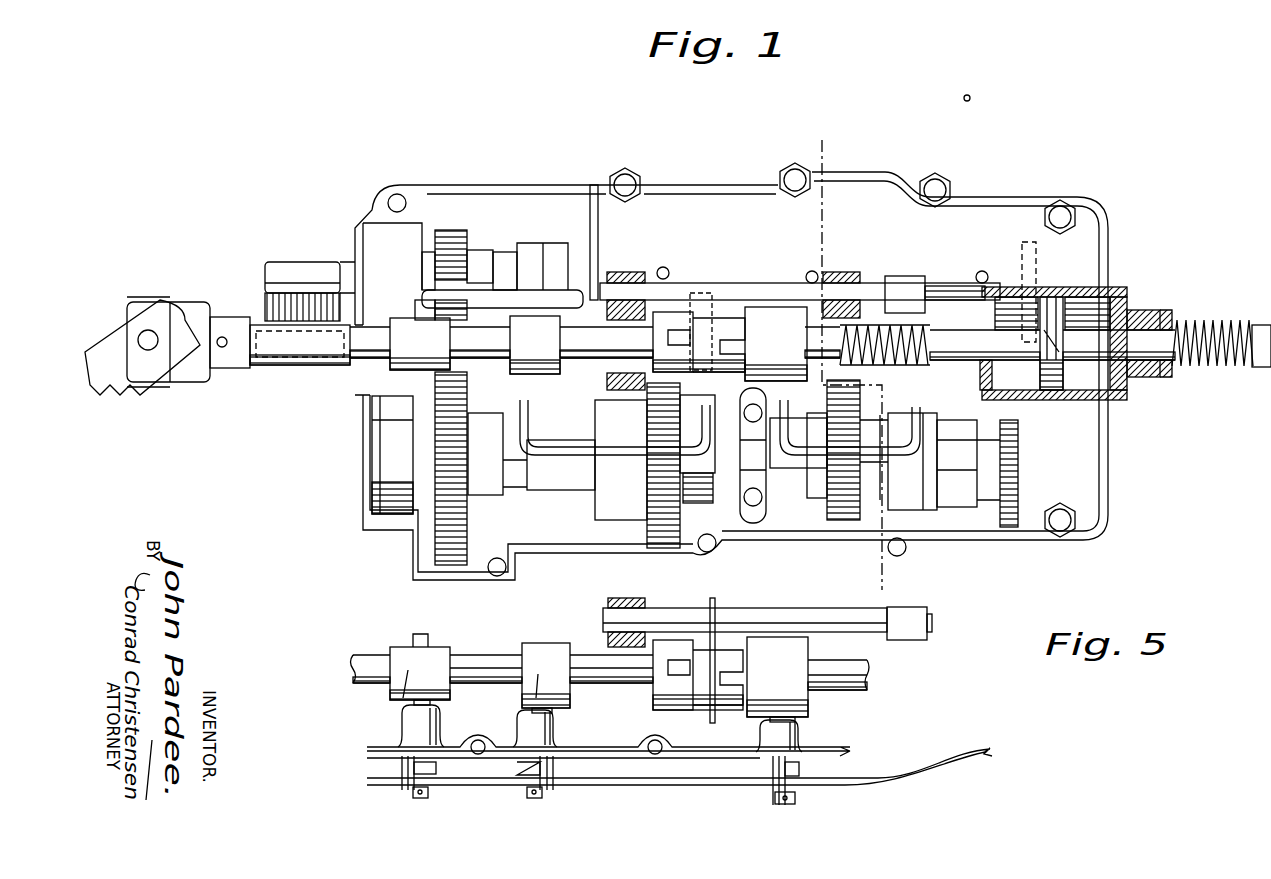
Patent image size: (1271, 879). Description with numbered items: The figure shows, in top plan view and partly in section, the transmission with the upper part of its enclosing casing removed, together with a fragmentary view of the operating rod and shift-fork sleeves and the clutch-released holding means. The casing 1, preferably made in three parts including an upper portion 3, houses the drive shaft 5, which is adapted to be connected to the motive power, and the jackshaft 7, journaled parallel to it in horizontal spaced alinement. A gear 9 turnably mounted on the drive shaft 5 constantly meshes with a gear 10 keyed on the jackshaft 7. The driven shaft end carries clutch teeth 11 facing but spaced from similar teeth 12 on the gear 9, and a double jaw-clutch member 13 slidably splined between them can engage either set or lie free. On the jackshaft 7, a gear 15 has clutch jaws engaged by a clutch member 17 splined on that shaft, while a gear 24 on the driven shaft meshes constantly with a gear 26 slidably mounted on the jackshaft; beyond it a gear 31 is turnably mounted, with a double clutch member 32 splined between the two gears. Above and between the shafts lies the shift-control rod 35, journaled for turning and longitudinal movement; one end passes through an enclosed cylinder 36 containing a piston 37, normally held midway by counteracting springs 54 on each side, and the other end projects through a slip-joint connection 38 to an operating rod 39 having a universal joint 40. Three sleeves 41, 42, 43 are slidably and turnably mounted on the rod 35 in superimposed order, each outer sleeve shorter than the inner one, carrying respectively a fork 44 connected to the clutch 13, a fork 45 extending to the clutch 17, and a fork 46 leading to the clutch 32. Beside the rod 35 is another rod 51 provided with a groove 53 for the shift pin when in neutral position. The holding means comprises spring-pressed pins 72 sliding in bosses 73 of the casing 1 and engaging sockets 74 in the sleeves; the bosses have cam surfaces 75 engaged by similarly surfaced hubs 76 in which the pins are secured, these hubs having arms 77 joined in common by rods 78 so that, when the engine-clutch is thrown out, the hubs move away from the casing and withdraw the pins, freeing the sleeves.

In FIG. 1, the casing 1 is at (984, 538).
In FIG. 5, the casing 1 is at (850, 754).
In FIG. 1, the upper portion 3 is at (1147, 482).
In FIG. 1, the drive shaft 5 is at (298, 275).
In FIG. 1, the jackshaft 7 is at (517, 455).
In FIG. 1, the gear 9 is at (457, 250).
In FIG. 5, the gear 9 is at (710, 664).
In FIG. 1, the gear 10 is at (452, 545).
In FIG. 1, the clutch teeth 11 is at (593, 185).
In FIG. 1, the clutch teeth 12 is at (480, 262).
In FIG. 1, the double jaw-clutch member 13 is at (525, 262).
In FIG. 1, the gear 15 is at (662, 512).
In FIG. 1, the clutch member 17 is at (698, 504).
In FIG. 1, the gear 24 is at (852, 368).
In FIG. 1, the gear 26 is at (848, 492).
In FIG. 1, the gear 31 is at (1008, 505).
In FIG. 1, the double clutch member 32 is at (949, 485).
In FIG. 1, the shift-control rod 35 is at (372, 360).
In FIG. 5, the shift-control rod 35 is at (372, 667).
In FIG. 1, the enclosed cylinder 36 is at (1097, 290).
In FIG. 1, the piston 37 is at (1053, 322).
In FIG. 1, the slip-joint connection 38 is at (303, 357).
In FIG. 1, the operating rod 39 is at (118, 372).
In FIG. 1, the universal joint 40 is at (178, 323).
In FIG. 1, the sleeve 41 is at (482, 347).
In FIG. 5, the sleeve 41 is at (485, 672).
In FIG. 1, the sleeve 42 is at (580, 346).
In FIG. 5, the sleeve 42 is at (587, 670).
In FIG. 1, the sleeve 43 is at (772, 325).
In FIG. 5, the sleeve 43 is at (745, 680).
In FIG. 1, the fork 44 is at (538, 262).
In FIG. 1, the fork 45 is at (621, 456).
In FIG. 1, the fork 46 is at (990, 448).
In FIG. 1, the rod 51 is at (840, 290).
In FIG. 5, the rod 51 is at (820, 614).
In FIG. 1, the groove 53 is at (702, 292).
In FIG. 5, the groove 53 is at (695, 628).
In FIG. 1, the counteracting springs 54 is at (888, 320).
In FIG. 5, the spring-pressed pins 72 is at (410, 702).
In FIG. 5, the bosses 73 is at (530, 725).
In FIG. 5, the sockets 74 is at (478, 675).
In FIG. 5, the cam surfaces 75 is at (425, 764).
In FIG. 5, the hubs 76 is at (437, 769).
In FIG. 5, the arms 77 is at (775, 782).
In FIG. 5, the rods 78 is at (612, 782).